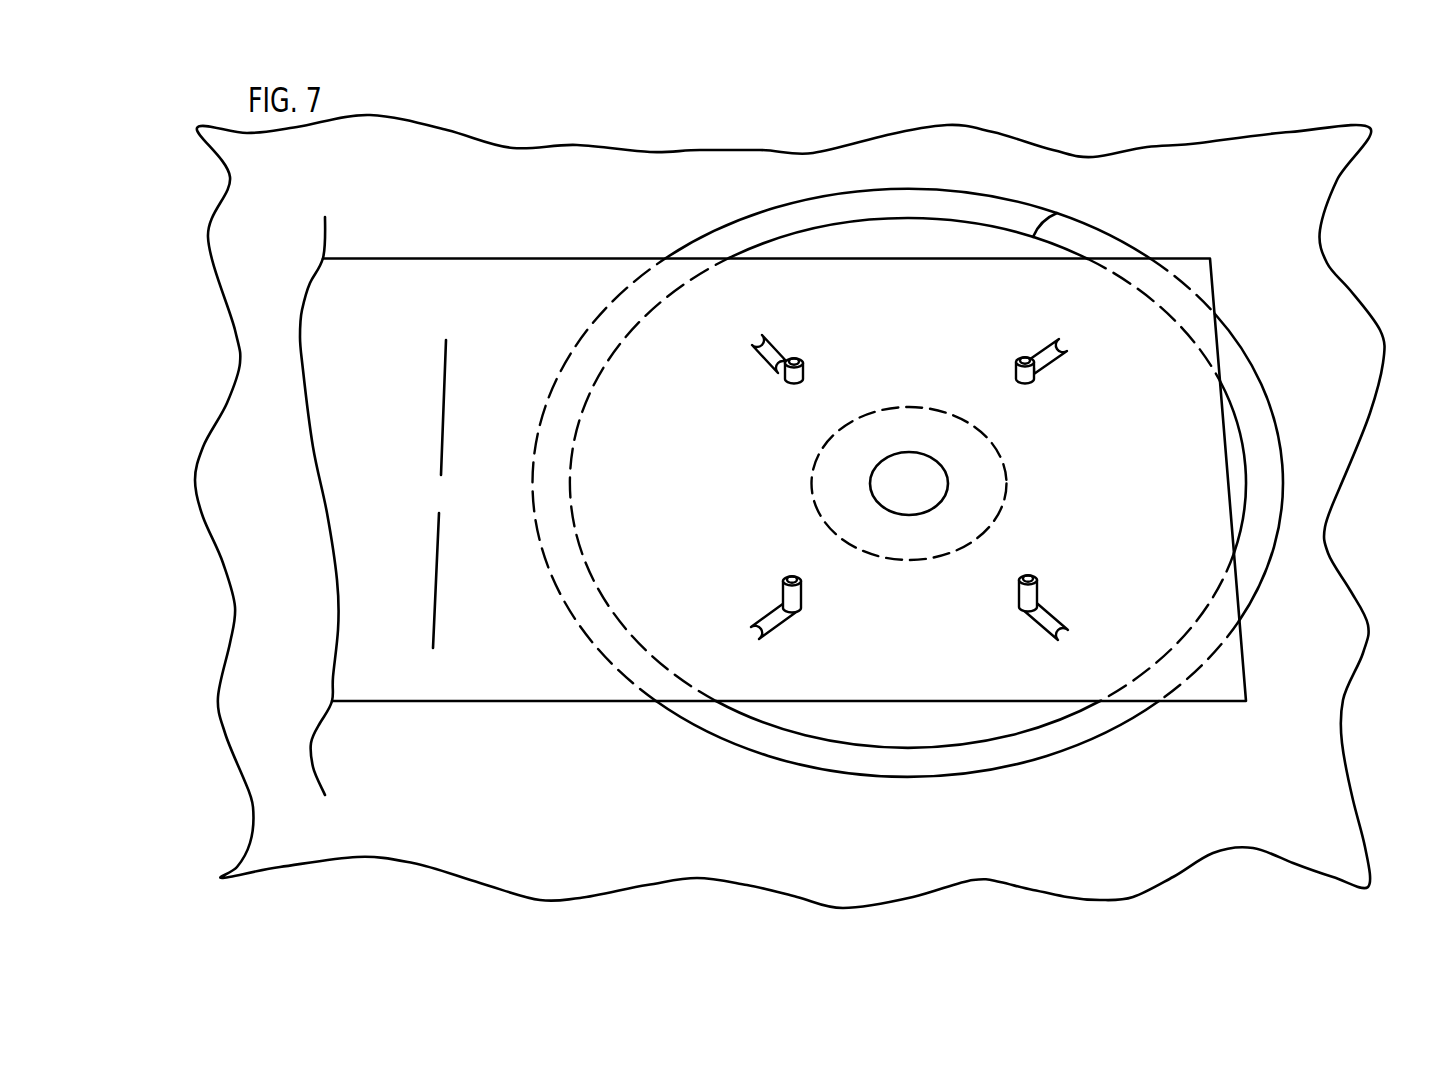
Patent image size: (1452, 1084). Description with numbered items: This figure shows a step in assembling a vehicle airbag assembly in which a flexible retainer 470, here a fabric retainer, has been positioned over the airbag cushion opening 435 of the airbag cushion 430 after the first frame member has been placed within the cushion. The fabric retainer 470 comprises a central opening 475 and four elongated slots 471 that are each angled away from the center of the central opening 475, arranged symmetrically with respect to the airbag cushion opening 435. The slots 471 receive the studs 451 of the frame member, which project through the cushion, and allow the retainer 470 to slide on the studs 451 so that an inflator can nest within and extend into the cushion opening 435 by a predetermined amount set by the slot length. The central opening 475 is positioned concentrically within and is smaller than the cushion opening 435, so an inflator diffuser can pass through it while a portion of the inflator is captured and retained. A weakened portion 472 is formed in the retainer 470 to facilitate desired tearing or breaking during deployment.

The airbag cushion 430 is at (922, 727).
The airbag cushion opening 435 is at (1007, 480).
The studs 451 is at (1036, 598).
The flexible retainer 470 is at (487, 662).
The elongated slots 471 is at (772, 340).
The weakened portion 472 is at (443, 387).
The central opening 475 is at (910, 482).